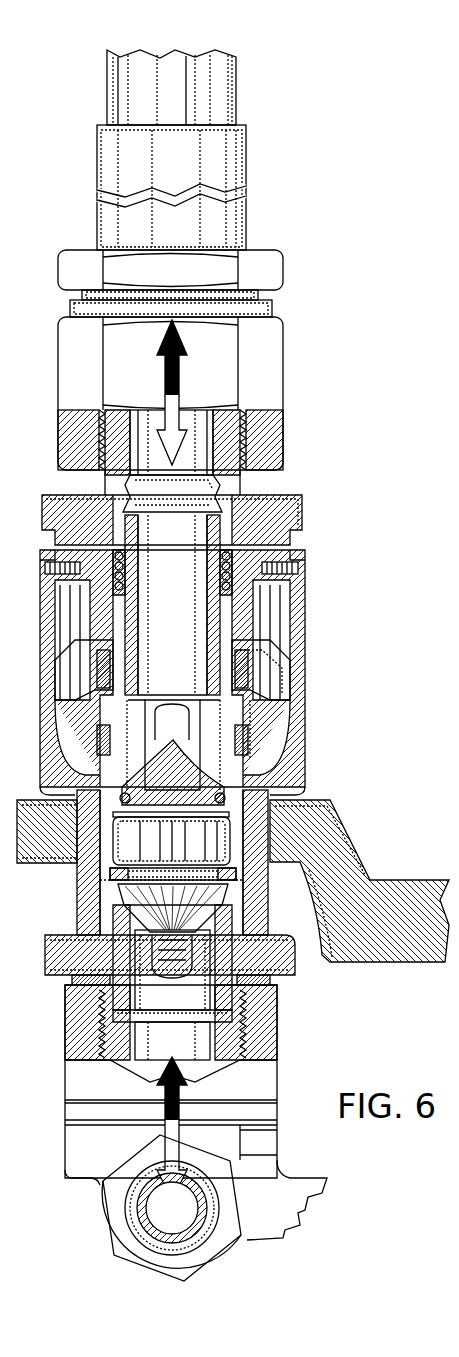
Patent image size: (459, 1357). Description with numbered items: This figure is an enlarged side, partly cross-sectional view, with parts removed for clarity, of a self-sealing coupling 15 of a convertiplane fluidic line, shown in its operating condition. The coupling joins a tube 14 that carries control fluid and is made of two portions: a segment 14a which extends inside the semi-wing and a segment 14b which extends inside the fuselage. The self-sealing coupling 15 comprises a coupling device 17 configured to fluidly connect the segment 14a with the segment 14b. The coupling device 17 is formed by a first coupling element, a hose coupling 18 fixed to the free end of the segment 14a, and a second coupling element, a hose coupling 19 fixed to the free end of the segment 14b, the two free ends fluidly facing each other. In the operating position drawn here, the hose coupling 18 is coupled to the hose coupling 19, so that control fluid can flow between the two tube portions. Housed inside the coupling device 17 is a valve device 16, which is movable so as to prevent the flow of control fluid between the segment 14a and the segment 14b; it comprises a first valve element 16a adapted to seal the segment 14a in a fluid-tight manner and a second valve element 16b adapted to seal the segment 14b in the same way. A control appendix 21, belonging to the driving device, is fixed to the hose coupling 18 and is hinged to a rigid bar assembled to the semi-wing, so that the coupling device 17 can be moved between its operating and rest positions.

The tube 14 is at (92, 163).
The segment 14a is at (143, 82).
The segment 14b is at (205, 1213).
The self-sealing coupling 15 is at (298, 185).
The valve device 16 is at (320, 780).
The first valve element 16a is at (246, 697).
The second valve element 16b is at (246, 893).
The coupling device 17 is at (455, 413).
The hose coupling 18 is at (295, 497).
The hose coupling 19 is at (72, 935).
The control appendix 21 is at (345, 890).